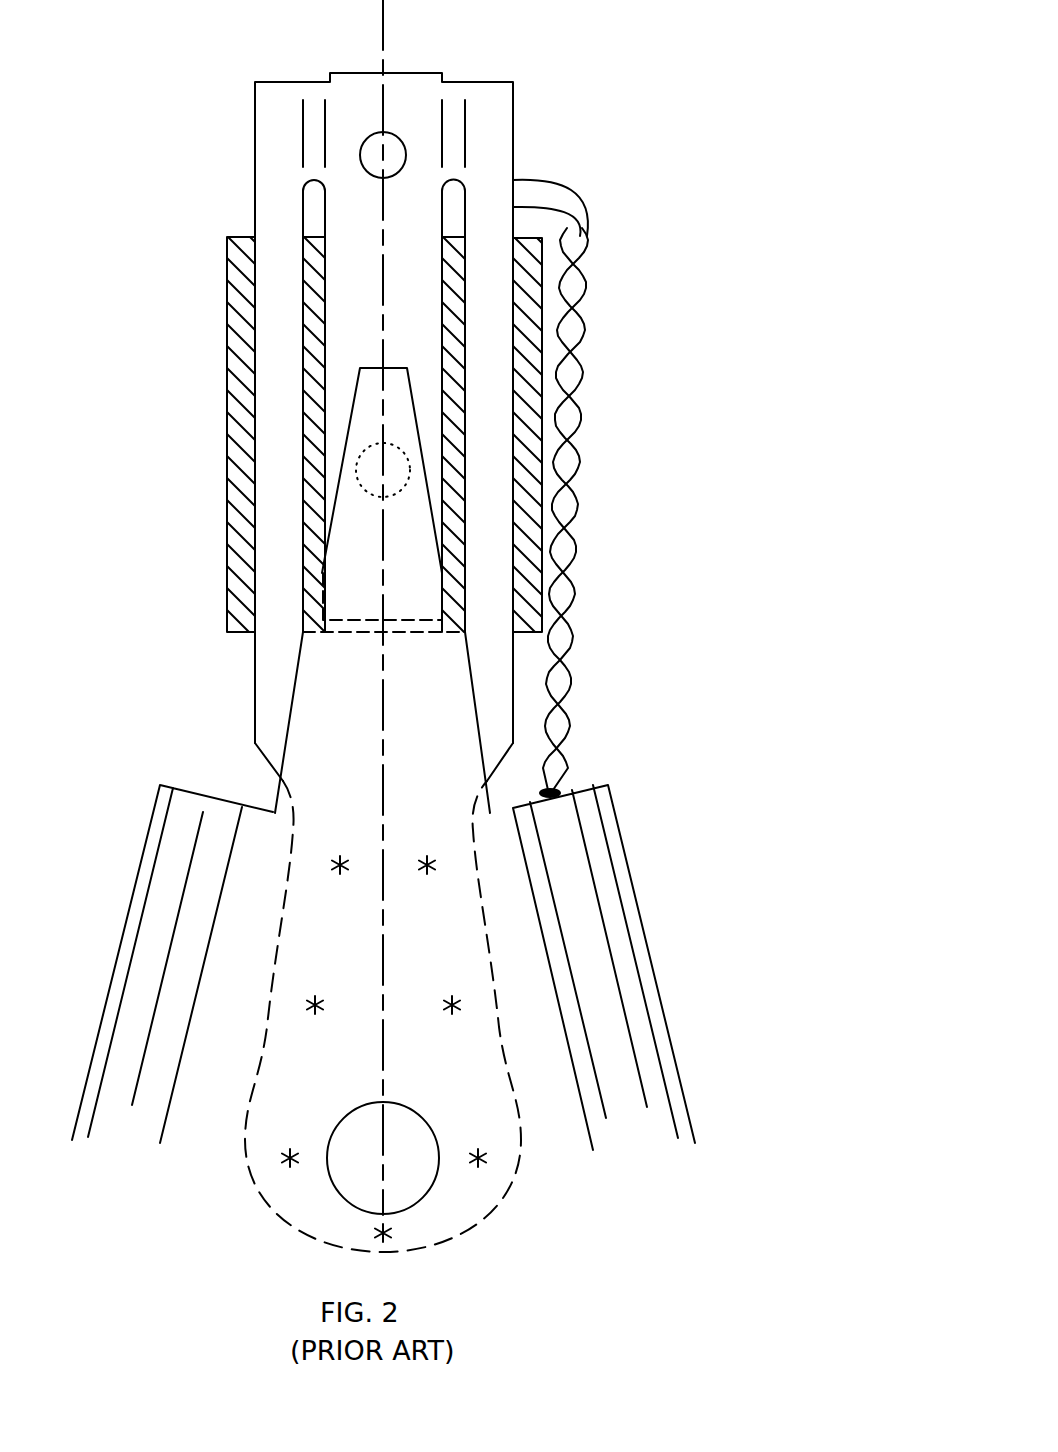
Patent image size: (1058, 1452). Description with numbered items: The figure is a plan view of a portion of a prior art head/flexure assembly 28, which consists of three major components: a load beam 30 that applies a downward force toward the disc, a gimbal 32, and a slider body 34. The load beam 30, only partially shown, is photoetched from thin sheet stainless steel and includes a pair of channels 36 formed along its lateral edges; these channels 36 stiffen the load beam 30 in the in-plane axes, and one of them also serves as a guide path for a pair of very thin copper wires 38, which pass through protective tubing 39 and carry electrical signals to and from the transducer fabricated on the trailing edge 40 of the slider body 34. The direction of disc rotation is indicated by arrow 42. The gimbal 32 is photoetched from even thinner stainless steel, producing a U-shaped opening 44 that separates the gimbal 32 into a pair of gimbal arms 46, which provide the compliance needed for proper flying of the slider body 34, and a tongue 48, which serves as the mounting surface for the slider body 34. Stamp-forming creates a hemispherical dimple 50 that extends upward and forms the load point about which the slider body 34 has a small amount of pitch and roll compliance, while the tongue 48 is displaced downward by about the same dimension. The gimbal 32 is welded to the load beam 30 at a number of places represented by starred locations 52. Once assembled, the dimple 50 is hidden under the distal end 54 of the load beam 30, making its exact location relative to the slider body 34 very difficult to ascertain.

The head/flexure assembly 28 is at (158, 153).
The load beam 30 is at (498, 832).
The gimbal 32 is at (513, 688).
The slider body 34 is at (542, 550).
The channels 36 is at (178, 840).
The copper wires 38 is at (588, 205).
The protective tubing 39 is at (565, 852).
The trailing edge 40 is at (532, 223).
The arrow 42 is at (705, 275).
The U-shaped opening 44 is at (453, 193).
The gimbal arms 46 is at (277, 348).
The tongue 48 is at (399, 139).
The hemispherical dimple 50 is at (412, 465).
The starred locations 52 is at (497, 1005).
The distal end 54 is at (397, 403).